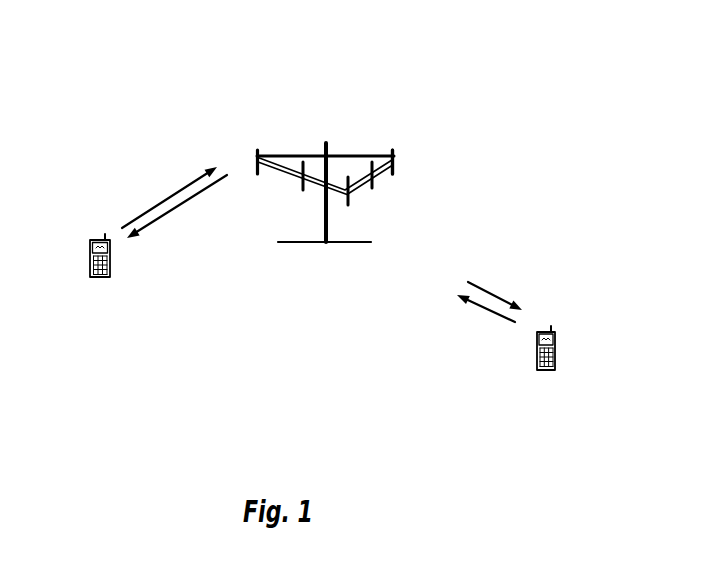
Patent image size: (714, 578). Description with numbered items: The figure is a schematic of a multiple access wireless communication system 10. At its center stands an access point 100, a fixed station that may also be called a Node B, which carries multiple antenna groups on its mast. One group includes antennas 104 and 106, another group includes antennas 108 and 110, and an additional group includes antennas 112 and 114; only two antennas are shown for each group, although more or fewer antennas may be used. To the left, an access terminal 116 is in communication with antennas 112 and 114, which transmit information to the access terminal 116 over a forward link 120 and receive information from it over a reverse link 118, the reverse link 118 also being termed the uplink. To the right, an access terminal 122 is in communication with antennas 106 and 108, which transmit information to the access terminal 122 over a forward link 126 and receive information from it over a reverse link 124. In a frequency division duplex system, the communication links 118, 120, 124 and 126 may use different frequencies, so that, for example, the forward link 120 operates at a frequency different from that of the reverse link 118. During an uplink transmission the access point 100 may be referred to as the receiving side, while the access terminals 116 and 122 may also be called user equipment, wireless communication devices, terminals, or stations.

The multiple access wireless communication system 10 is at (137, 80).
The access point 100 is at (312, 245).
The antenna 104 is at (349, 203).
The antenna 106 is at (373, 186).
The antenna 108 is at (395, 167).
The antenna 110 is at (328, 147).
The antenna 112 is at (259, 155).
The antenna 114 is at (303, 191).
The access terminal 116 is at (104, 234).
The reverse link 118 is at (170, 197).
The forward link 120 is at (182, 209).
The access terminal 122 is at (549, 327).
The reverse link 124 is at (478, 308).
The forward link 126 is at (494, 297).